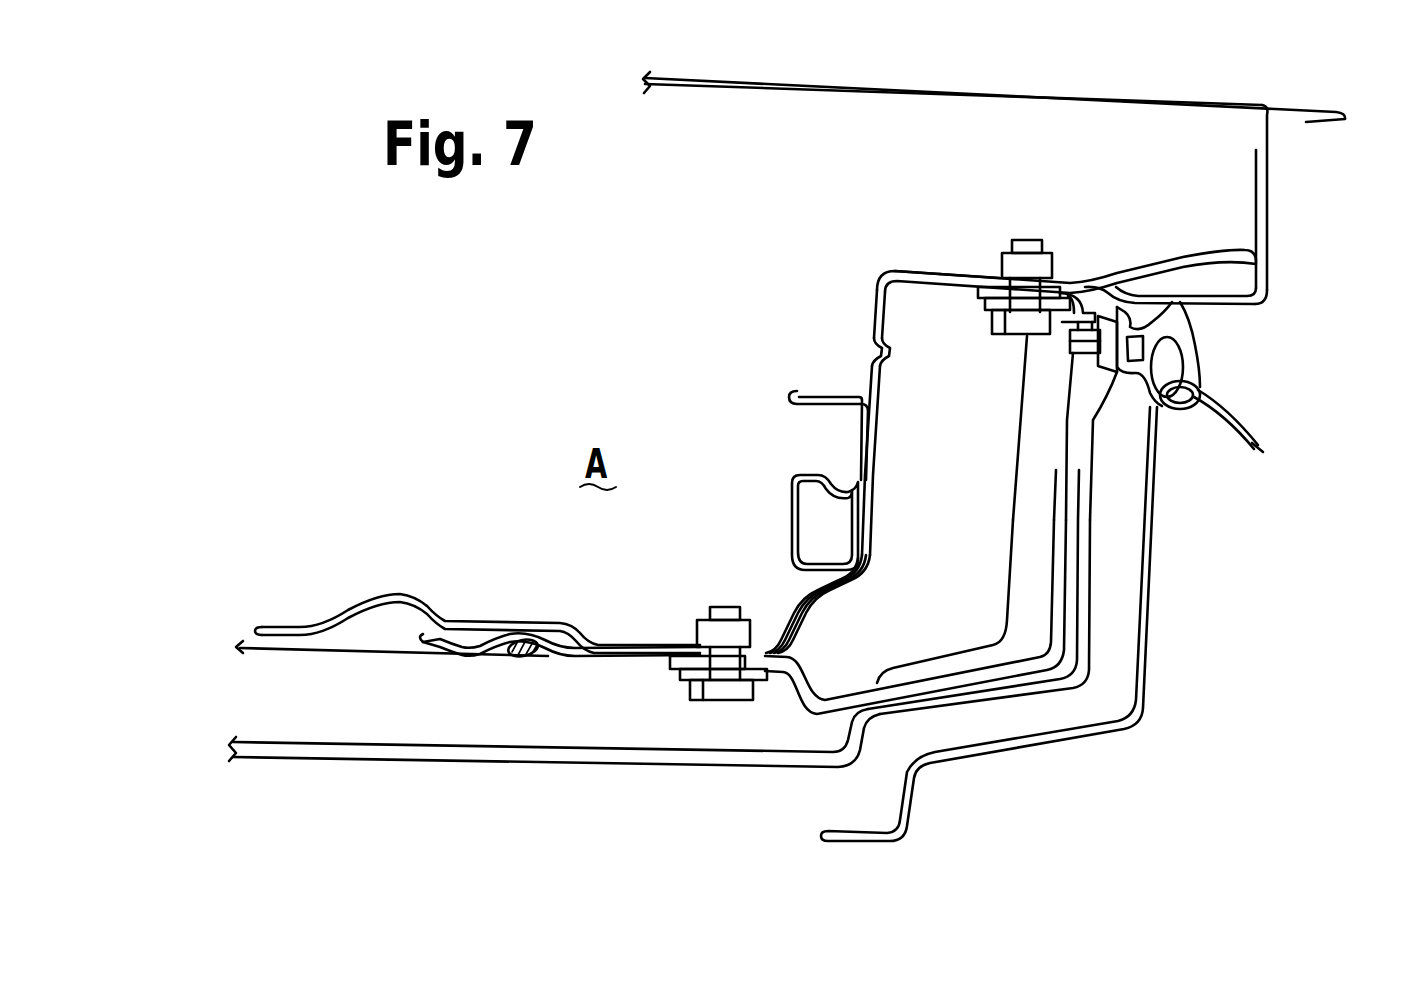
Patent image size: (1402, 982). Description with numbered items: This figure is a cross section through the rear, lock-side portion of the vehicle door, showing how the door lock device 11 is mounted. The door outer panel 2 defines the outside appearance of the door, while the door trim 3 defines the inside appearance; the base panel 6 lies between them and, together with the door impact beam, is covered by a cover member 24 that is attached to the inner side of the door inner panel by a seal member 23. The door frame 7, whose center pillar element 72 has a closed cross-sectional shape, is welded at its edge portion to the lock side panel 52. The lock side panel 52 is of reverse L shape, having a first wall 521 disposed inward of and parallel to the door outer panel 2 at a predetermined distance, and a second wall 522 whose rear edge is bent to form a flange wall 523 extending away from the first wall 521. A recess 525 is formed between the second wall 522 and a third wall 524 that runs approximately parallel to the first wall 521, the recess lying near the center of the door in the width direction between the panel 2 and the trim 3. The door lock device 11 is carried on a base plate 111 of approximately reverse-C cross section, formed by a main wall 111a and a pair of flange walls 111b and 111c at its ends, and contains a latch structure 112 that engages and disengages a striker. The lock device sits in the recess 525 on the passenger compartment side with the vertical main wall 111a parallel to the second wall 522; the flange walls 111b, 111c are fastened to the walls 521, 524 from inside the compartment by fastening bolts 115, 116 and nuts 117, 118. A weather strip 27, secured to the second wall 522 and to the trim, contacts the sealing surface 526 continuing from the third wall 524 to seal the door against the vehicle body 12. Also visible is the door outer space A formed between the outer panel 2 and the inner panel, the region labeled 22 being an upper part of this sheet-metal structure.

The door outer panel 2 is at (992, 87).
The door trim 3 is at (474, 760).
The base panel 6 is at (365, 602).
The door frame 7 is at (792, 395).
The door lock device 11 is at (1013, 488).
The vehicle body 12 is at (1148, 592).
The roof side rail flange 22 is at (905, 268).
The seal member 23 is at (521, 658).
The cover member 24 is at (396, 652).
The weather strip 27 is at (1200, 358).
The lock side panel 52 is at (1266, 255).
The center pillar element 72 is at (792, 499).
The base plate 111 is at (1078, 521).
The main wall 111a is at (1058, 612).
The flange wall 111b is at (985, 675).
The flange wall 111c is at (1060, 300).
The latch structure 112 is at (1020, 553).
The fastening bolt 115 is at (726, 702).
The fastening bolt 116 is at (1015, 336).
The nut 117 is at (706, 630).
The nut 118 is at (1045, 251).
The first wall 521 is at (582, 656).
The second wall 522 is at (889, 319).
The flange wall 523 is at (1299, 101).
The third wall 524 is at (950, 270).
The recess 525 is at (888, 392).
The sealing surface 526 is at (1213, 306).